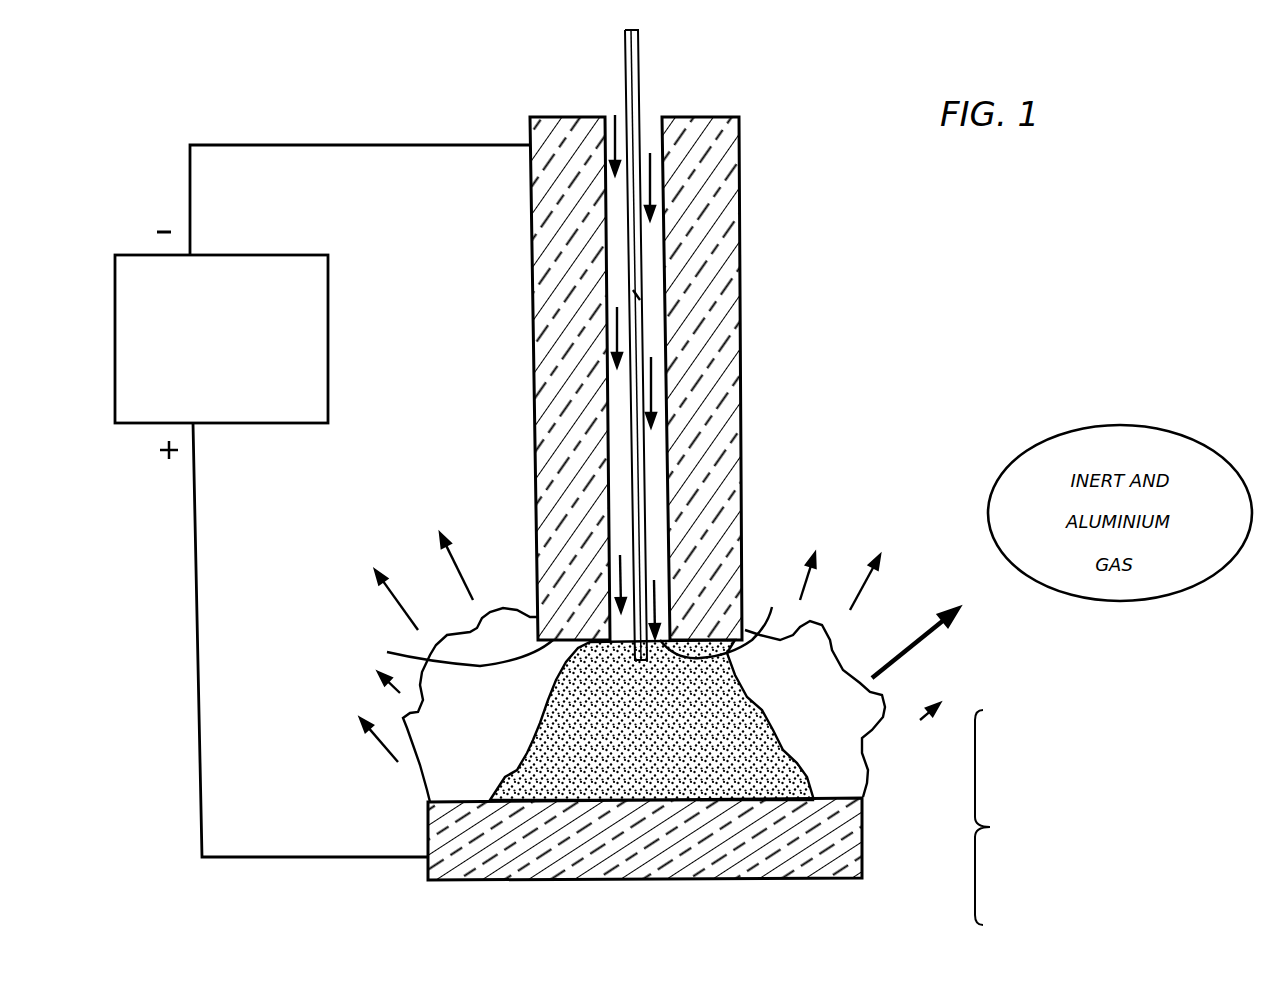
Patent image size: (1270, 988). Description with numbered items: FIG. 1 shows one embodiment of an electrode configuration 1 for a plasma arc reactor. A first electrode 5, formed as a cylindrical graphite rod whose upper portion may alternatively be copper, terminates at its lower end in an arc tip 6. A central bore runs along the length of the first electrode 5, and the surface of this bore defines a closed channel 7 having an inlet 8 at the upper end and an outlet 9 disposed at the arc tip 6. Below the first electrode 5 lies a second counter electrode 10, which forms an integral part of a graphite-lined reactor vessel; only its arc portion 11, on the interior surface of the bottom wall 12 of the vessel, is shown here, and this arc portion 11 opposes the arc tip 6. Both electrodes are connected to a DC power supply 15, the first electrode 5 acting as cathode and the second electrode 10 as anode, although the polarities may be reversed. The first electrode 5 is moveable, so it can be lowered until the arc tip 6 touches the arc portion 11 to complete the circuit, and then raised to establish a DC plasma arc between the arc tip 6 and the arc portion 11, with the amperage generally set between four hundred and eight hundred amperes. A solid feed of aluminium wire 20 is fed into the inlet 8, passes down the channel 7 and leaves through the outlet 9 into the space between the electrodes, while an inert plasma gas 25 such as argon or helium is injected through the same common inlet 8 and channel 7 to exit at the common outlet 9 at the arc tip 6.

The welding apparatus 1 is at (864, 334).
The first electrode 5 is at (740, 183).
The arc tip 6 is at (660, 667).
The closed channel 7 is at (657, 297).
The inlet 8 is at (650, 123).
The outlet 9 is at (651, 689).
The second counter electrode 10 is at (999, 817).
The arc portion 11 is at (757, 797).
The bottom wall 12 is at (817, 878).
The DC power supply 15 is at (115, 400).
The aluminium wire 20 is at (638, 57).
The inert plasma gas 25 is at (610, 125).